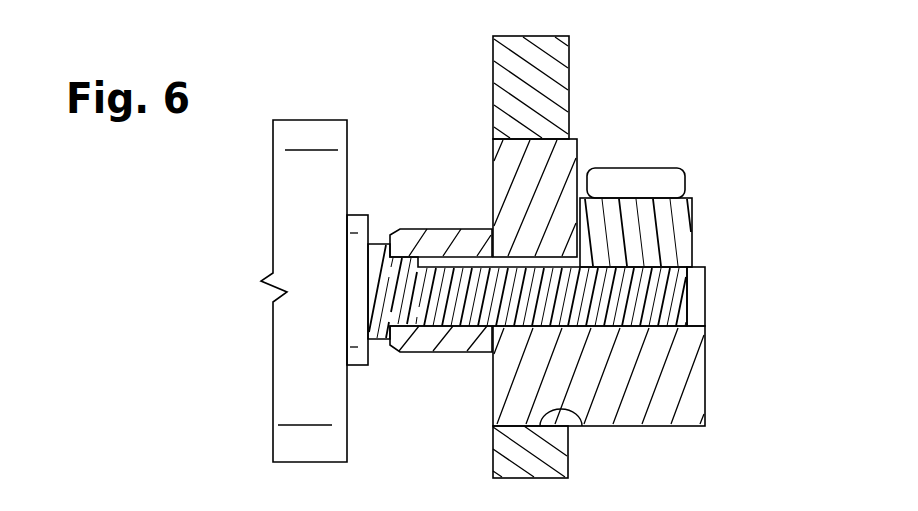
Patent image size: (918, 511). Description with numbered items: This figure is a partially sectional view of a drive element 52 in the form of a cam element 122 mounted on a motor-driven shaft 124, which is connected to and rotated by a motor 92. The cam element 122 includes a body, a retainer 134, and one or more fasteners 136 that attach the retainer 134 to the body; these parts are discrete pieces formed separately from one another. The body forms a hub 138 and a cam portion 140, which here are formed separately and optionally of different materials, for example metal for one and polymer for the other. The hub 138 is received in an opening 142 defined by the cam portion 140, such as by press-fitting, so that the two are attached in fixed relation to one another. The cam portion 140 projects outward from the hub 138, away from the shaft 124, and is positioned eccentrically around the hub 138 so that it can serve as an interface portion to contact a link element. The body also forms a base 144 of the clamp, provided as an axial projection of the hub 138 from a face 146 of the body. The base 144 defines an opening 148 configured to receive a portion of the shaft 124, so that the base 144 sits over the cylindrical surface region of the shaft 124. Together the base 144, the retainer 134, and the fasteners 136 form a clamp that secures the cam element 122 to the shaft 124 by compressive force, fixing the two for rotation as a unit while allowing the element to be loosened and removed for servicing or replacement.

The drive element 52 is at (672, 60).
The cam element 122 is at (671, 96).
The motor 92 is at (310, 120).
The face of the body 146 is at (570, 80).
The fastener 136 is at (660, 168).
The retainer 134 is at (694, 235).
The opening 148 is at (696, 287).
The motor-driven shaft 124 is at (690, 297).
The base of the clamp 144 is at (707, 374).
The opening 142 is at (577, 421).
The cam portion 140 is at (491, 452).
The hub 138 is at (491, 387).